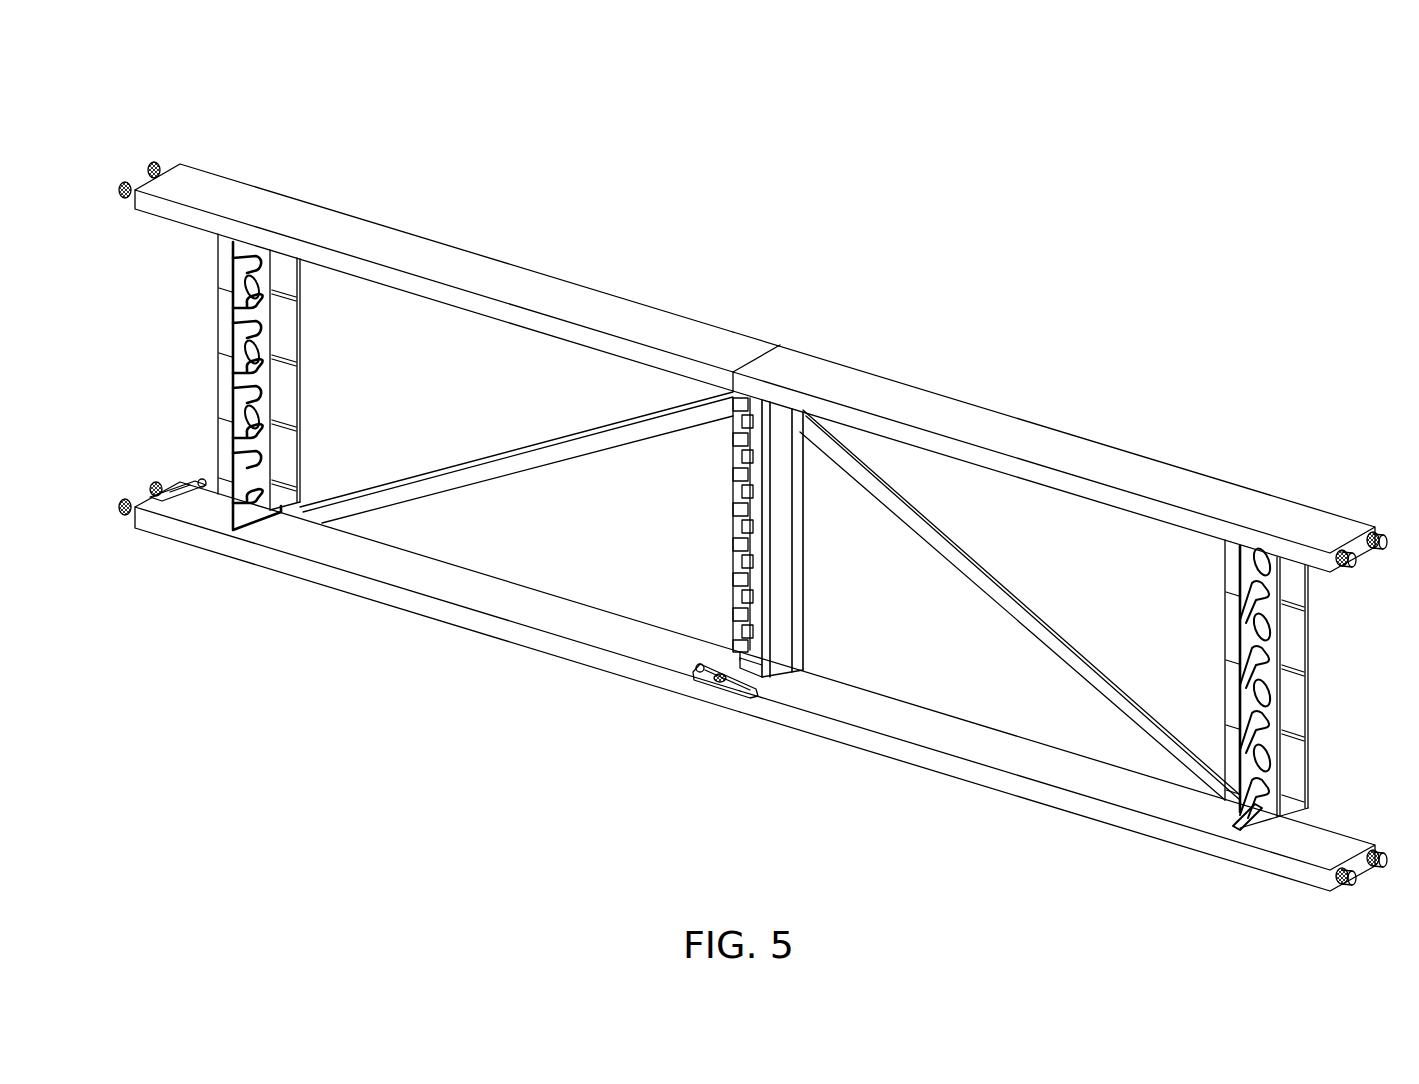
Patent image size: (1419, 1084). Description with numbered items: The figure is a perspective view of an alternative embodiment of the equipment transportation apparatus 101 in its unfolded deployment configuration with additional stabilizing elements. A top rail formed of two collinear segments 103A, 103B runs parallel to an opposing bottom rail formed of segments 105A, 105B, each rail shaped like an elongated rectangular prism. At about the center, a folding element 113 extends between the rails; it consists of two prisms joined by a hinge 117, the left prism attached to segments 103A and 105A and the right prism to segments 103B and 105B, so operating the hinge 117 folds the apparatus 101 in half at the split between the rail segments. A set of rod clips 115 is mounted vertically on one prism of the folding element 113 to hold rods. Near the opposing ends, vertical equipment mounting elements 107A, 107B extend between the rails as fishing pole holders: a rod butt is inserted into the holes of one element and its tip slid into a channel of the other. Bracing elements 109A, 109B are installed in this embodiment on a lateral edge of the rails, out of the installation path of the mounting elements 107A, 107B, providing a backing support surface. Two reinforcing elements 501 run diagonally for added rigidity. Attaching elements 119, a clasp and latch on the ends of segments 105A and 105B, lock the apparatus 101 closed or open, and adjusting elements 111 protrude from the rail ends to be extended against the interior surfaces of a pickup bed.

The equipment transportation apparatus 101 is at (1186, 292).
The top rail segment 103A is at (478, 250).
The top rail segment 103B is at (880, 375).
The bottom rail segment 105A is at (440, 625).
The bottom rail segment 105B is at (945, 765).
The equipment mounting element 107A is at (272, 255).
The equipment mounting element 107B is at (1242, 582).
The bracing element 109A is at (290, 352).
The bracing element 109B is at (1226, 658).
The adjusting elements 111 is at (152, 168).
The folding element 113 is at (787, 435).
The rod clips 115 is at (733, 563).
The hinge 117 is at (768, 650).
The attaching element 119 is at (182, 500).
The reinforcing elements 501 is at (603, 435).